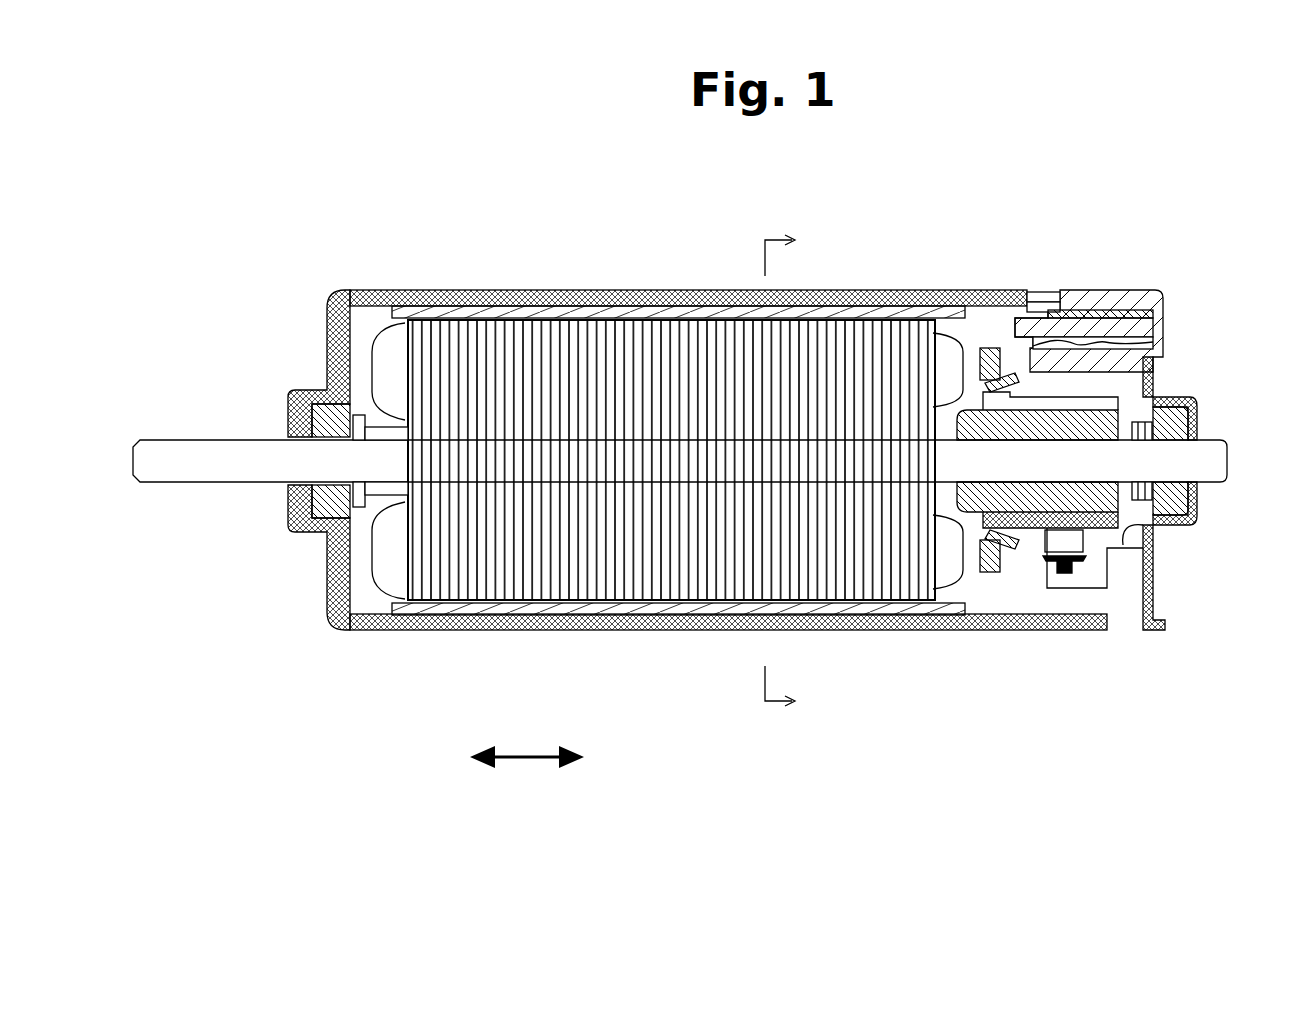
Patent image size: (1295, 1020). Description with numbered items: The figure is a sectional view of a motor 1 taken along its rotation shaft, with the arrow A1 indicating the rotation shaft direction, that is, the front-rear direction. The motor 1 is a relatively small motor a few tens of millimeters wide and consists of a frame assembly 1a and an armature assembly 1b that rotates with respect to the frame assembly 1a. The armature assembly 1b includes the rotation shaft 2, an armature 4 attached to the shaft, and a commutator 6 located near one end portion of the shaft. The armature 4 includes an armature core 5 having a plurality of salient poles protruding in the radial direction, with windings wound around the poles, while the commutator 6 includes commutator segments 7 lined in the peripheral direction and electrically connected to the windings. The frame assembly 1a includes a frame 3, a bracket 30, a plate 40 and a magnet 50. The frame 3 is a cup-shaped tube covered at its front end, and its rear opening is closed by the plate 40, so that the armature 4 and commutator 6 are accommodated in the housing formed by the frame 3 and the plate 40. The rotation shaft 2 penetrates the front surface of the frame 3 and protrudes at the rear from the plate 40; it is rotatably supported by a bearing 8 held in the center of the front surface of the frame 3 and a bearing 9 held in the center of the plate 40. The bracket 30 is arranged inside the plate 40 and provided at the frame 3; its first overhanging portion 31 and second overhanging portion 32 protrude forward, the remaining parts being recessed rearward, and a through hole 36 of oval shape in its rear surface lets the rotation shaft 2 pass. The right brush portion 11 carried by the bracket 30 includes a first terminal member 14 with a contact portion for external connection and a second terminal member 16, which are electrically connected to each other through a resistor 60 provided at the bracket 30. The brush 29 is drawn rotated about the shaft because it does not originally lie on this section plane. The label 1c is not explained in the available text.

The motor 1 is at (270, 100).
The frame assembly 1a is at (413, 290).
The armature assembly 1b is at (337, 290).
The housing (yoke) 1c is at (415, 153).
The rotation shaft 2 is at (232, 465).
The frame 3 is at (415, 632).
The armature 4 is at (373, 567).
The armature core 5 is at (538, 600).
The commutator 6 is at (975, 527).
The commutator segments 7 is at (1002, 545).
The bearing 8 is at (290, 405).
The bearing 9 is at (1190, 503).
The right brush portion 11 is at (1006, 325).
The first terminal member 14 is at (1125, 312).
The second terminal member 16 is at (1045, 300).
The brush 29 is at (1060, 545).
The bracket 30 is at (1094, 289).
The first overhanging portion 31 is at (1093, 600).
The second overhanging portion 32 is at (1072, 335).
The through hole 36 is at (1148, 523).
The plate 40 is at (1152, 585).
The magnet 50 is at (481, 305).
The resistor 60 is at (1140, 327).
The arrow indicating rotation shaft direction A1 is at (545, 752).